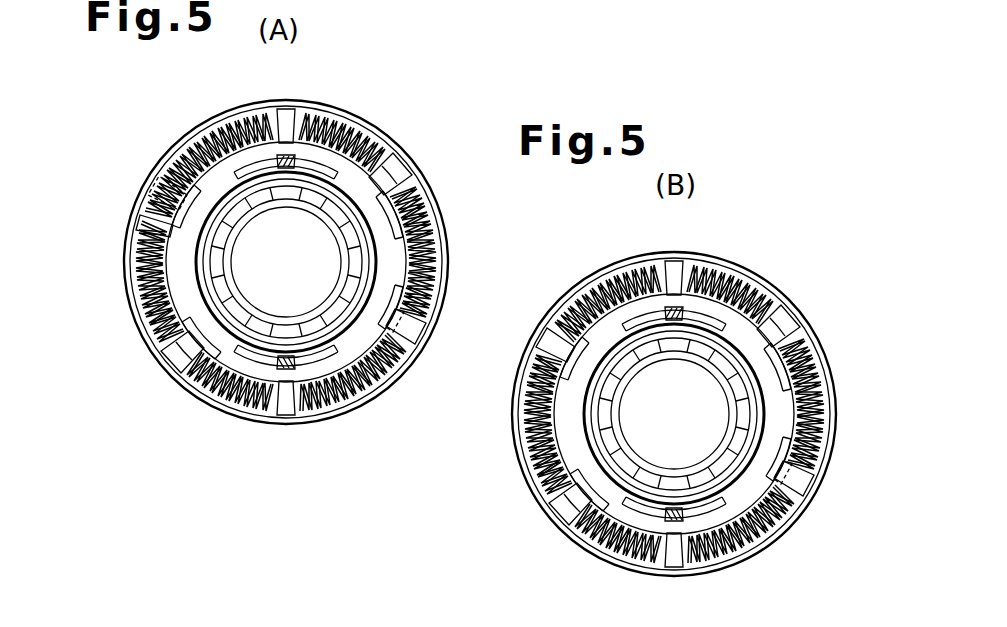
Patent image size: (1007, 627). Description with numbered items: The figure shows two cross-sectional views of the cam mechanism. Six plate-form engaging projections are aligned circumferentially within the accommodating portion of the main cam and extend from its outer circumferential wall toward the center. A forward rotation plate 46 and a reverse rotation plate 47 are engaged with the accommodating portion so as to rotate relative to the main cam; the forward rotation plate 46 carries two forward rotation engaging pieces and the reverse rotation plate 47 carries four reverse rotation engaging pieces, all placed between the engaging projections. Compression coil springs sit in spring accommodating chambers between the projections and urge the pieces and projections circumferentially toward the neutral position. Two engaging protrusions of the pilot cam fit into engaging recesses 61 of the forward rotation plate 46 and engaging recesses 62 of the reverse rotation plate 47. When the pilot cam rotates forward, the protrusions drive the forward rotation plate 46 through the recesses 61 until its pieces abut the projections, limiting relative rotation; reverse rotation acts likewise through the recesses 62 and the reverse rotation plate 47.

The forward rotation plate 46 is at (125, 234).
The reverse rotation plate 47 is at (717, 414).
The engaging recess 61 is at (286, 259).
The engaging recess 62 is at (674, 414).